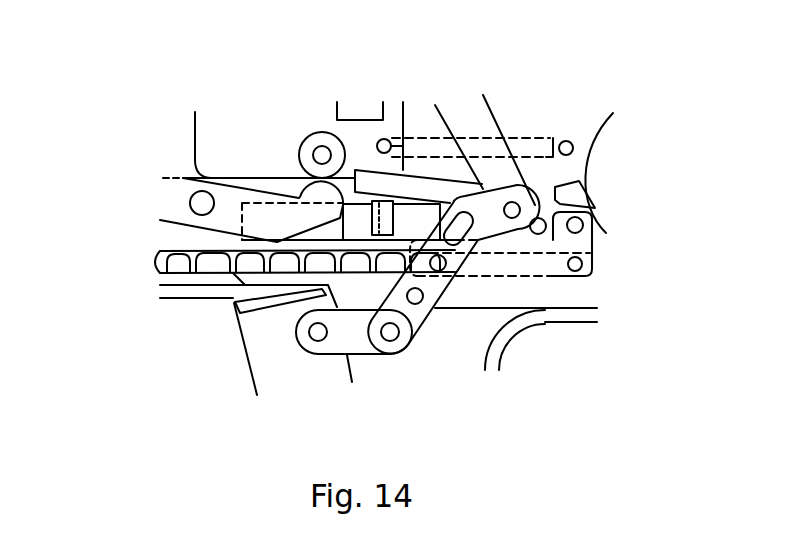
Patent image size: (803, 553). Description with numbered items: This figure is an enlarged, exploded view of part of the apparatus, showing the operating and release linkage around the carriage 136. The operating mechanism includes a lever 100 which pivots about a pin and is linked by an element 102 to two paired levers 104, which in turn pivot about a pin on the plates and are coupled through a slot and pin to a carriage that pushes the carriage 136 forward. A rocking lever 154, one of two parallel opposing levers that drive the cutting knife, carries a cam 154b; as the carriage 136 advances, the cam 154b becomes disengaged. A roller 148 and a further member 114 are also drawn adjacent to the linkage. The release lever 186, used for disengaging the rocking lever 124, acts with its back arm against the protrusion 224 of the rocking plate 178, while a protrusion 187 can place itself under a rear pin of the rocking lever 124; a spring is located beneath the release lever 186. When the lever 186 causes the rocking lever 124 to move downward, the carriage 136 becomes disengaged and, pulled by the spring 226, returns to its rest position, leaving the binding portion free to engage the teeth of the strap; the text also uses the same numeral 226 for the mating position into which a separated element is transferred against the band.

The lever 100 is at (262, 358).
The element 102 is at (342, 337).
The paired levers 104 is at (412, 317).
The carriage plate 114 is at (474, 123).
The rocking lever 124 is at (368, 188).
The carriage 136 is at (213, 147).
The roller 148 is at (312, 142).
The rocking lever 154 is at (178, 206).
The cam 154b is at (306, 193).
The rocking plate 178 is at (588, 160).
The lever 186 is at (588, 225).
The protrusion 187 is at (390, 217).
The protrusion 224 is at (577, 198).
The spring 226 is at (518, 147).